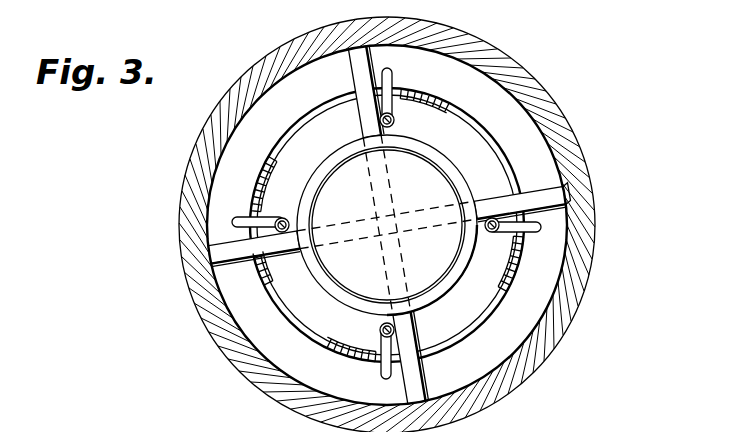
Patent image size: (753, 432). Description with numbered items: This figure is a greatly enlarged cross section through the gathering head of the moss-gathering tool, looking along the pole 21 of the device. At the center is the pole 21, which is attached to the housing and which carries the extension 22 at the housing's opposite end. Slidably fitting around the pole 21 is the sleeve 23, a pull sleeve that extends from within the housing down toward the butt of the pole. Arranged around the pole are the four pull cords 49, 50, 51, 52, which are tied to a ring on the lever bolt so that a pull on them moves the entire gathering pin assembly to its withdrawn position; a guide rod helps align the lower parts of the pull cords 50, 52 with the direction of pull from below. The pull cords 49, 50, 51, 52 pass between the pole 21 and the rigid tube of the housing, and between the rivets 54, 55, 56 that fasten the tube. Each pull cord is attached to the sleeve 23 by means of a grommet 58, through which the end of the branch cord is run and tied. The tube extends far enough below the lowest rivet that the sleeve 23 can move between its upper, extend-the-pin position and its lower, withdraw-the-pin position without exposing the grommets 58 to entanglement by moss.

The pole 21 is at (424, 185).
The extension 22 is at (560, 134).
The sleeve 23 is at (476, 320).
The pull cord 49 is at (396, 118).
The pull cord 50 is at (526, 240).
The pull cord 51 is at (375, 330).
The pull cord 52 is at (232, 223).
The rivet 54 is at (353, 72).
The rivet 55 is at (548, 192).
The rivet 56 is at (513, 271).
The grommet 58 is at (383, 357).